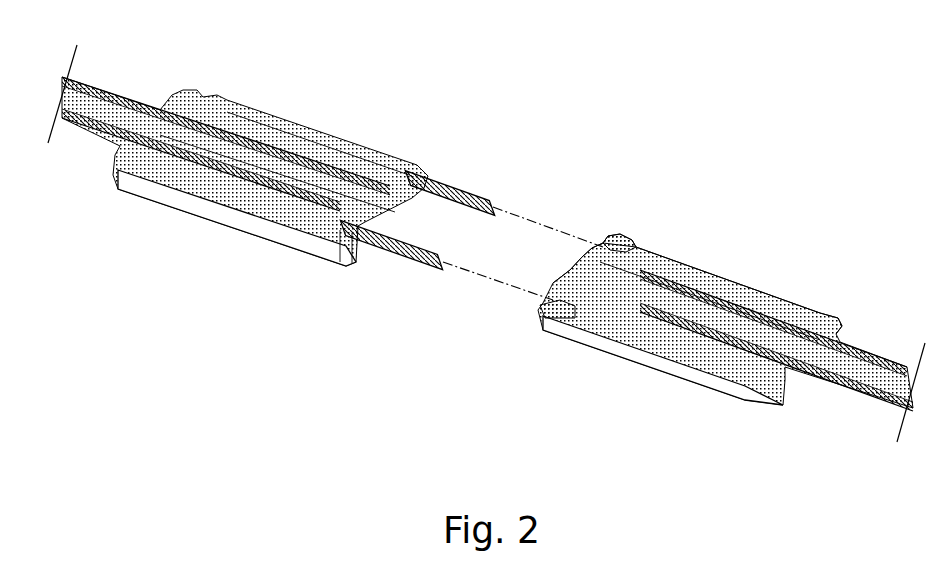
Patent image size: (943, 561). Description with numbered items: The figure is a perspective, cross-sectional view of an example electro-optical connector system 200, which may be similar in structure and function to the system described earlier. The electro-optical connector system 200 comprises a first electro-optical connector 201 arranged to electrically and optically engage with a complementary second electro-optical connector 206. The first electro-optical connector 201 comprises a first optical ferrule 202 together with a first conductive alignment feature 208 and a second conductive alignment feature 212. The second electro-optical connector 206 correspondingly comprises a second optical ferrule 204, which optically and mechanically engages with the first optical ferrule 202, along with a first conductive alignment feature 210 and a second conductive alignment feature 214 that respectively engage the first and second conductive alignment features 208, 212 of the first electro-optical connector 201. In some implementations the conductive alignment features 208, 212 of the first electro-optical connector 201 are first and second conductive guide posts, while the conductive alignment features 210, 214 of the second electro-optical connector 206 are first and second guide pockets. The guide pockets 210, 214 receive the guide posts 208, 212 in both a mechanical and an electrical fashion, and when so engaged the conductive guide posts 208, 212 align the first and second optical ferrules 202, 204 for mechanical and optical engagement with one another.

The electro-optical connector system 200 is at (219, 58).
The first electro-optical connector 201 is at (206, 234).
The first optical ferrule 202 is at (335, 218).
The second optical ferrule 204 is at (593, 277).
The second electro-optical connector 206 is at (681, 394).
The first conductive alignment feature 208 is at (390, 252).
The first conductive alignment feature 210 is at (575, 312).
The second conductive alignment feature 212 is at (446, 184).
The second conductive alignment feature 214 is at (618, 253).